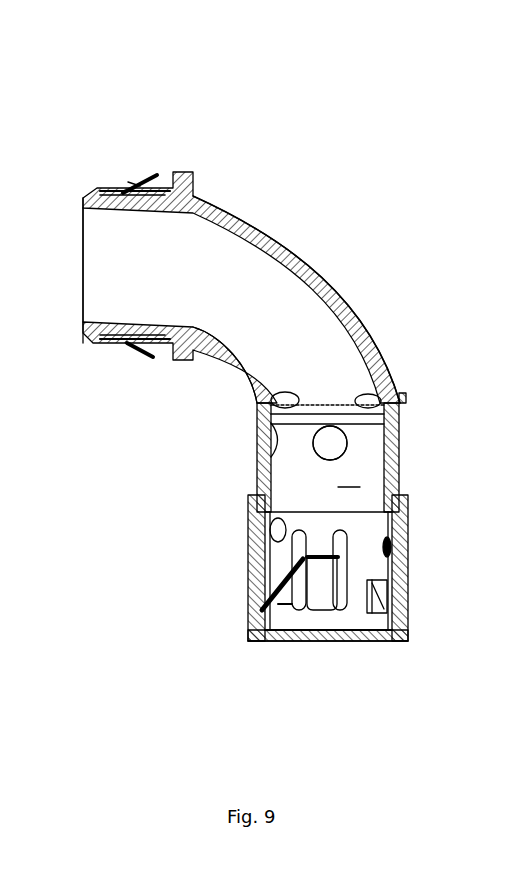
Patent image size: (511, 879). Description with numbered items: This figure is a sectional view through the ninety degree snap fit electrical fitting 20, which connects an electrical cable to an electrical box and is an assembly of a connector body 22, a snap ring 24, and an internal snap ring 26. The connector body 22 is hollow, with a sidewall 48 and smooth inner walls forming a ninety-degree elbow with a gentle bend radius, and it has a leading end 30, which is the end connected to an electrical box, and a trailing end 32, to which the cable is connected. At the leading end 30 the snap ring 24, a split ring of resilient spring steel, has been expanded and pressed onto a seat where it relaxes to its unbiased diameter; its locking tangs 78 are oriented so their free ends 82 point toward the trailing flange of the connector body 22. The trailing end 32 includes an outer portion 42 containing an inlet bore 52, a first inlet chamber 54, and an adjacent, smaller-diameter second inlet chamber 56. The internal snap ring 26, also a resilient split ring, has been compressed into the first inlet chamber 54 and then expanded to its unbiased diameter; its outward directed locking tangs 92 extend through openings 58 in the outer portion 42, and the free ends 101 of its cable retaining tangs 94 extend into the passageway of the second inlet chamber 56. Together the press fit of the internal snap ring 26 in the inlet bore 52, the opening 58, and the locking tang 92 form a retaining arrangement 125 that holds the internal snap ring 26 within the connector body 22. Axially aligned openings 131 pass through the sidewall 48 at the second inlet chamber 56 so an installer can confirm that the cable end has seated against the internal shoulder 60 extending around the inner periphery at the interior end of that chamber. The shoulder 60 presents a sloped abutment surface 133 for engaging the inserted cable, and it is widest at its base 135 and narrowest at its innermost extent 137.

The ninety degree snap fit electrical fitting 20 is at (311, 191).
The connector body 22 is at (344, 291).
The snap ring 24 is at (113, 185).
The internal snap ring 26 is at (362, 525).
The leading end 30 is at (80, 270).
The trailing end 32 is at (320, 641).
The outer portion 42 is at (250, 536).
The sidewall 48 is at (376, 347).
The inlet bore 52 is at (350, 637).
The first inlet chamber 54 is at (264, 575).
The second inlet chamber 56 is at (337, 456).
The opening 58 is at (375, 613).
The internal shoulder 60 is at (353, 408).
The locking tang 78 is at (131, 180).
The free end 82 is at (157, 174).
The outward directed locking tang 92 is at (392, 588).
The cable retaining tang 94 is at (284, 604).
The free end 101 is at (325, 552).
The retaining arrangement 125 is at (390, 552).
The axially aligned opening 131 is at (331, 443).
The sloped abutment surface 133 is at (399, 440).
The base 135 is at (271, 456).
The innermost extent 137 is at (257, 393).